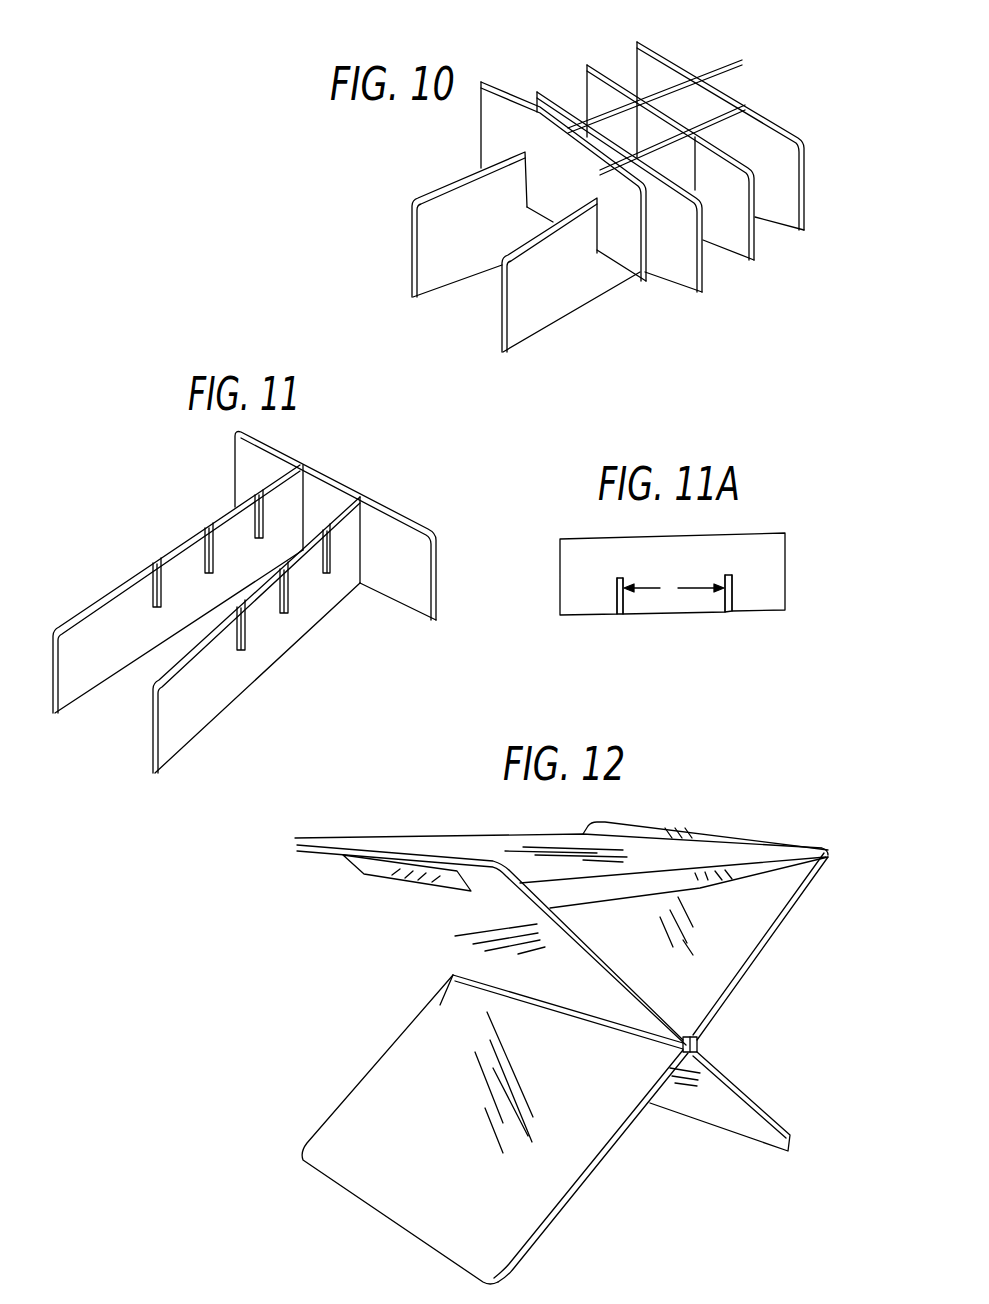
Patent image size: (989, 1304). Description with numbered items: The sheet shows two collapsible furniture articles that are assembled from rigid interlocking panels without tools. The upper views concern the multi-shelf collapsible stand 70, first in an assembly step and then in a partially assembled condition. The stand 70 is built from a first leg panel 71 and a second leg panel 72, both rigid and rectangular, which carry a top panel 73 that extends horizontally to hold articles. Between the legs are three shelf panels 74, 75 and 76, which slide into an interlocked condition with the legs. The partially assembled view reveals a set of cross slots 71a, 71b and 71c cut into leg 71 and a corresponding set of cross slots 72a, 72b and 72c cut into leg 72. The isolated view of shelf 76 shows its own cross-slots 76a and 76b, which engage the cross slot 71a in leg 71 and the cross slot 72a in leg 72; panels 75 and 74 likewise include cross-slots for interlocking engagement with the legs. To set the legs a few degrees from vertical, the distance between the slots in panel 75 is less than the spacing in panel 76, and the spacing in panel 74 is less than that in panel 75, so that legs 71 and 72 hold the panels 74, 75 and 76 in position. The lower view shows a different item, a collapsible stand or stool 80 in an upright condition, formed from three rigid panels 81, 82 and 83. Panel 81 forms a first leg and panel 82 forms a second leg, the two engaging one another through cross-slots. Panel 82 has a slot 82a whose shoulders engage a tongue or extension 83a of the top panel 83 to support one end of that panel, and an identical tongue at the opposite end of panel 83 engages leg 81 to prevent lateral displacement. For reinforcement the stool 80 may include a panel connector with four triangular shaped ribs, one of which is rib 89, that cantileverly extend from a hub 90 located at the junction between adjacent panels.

In FIG. 10, the multi-shelf collapsible stand 70 is at (740, 76).
In FIG. 10, the first leg panel 71 is at (530, 323).
In FIG. 11, the first leg panel 71 is at (278, 635).
In FIG. 11, the cross slot 71a is at (242, 650).
In FIG. 11, the cross slot 71b is at (288, 613).
In FIG. 11, the cross slot 71c is at (345, 596).
In FIG. 10, the second leg panel 72 is at (438, 272).
In FIG. 11, the second leg panel 72 is at (178, 579).
In FIG. 11, the cross slot 72a is at (153, 563).
In FIG. 11, the cross slot 72b is at (203, 530).
In FIG. 11, the cross slot 72c is at (245, 497).
In FIG. 10, the top panel 73 is at (790, 227).
In FIG. 11, the top panel 73 is at (402, 507).
In FIG. 10, the shelf panel 74 is at (742, 250).
In FIG. 10, the shelf panel 75 is at (688, 283).
In FIG. 10, the shelf panel 76 is at (635, 279).
In FIG. 11A, the shelf panel 76 is at (654, 591).
In FIG. 11A, the cross-slot 76a is at (620, 614).
In FIG. 11A, the cross-slot 76b is at (728, 612).
In FIG. 12, the collapsible stand or stool 80 is at (742, 820).
In FIG. 12, the first leg panel 81 is at (767, 943).
In FIG. 12, the second leg panel 82 is at (740, 1093).
In FIG. 12, the slot 82a is at (363, 875).
In FIG. 12, the top panel 83 is at (556, 919).
In FIG. 12, the tongue 83a is at (407, 875).
In FIG. 12, the triangular shaped rib 89 is at (487, 987).
In FIG. 12, the hub 90 is at (697, 1040).